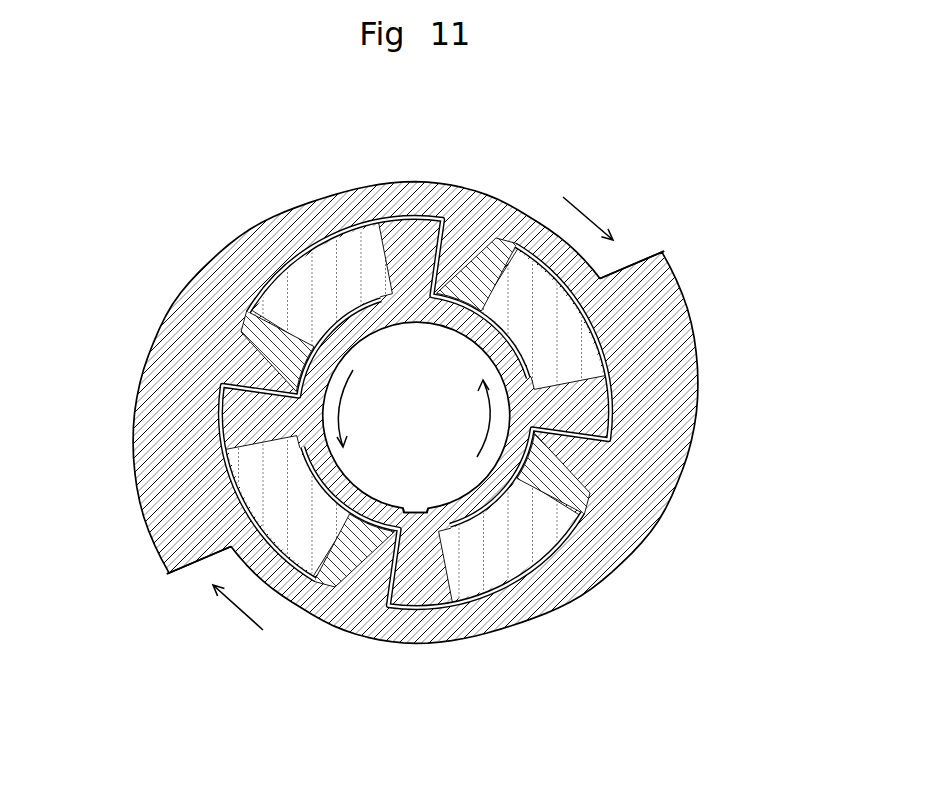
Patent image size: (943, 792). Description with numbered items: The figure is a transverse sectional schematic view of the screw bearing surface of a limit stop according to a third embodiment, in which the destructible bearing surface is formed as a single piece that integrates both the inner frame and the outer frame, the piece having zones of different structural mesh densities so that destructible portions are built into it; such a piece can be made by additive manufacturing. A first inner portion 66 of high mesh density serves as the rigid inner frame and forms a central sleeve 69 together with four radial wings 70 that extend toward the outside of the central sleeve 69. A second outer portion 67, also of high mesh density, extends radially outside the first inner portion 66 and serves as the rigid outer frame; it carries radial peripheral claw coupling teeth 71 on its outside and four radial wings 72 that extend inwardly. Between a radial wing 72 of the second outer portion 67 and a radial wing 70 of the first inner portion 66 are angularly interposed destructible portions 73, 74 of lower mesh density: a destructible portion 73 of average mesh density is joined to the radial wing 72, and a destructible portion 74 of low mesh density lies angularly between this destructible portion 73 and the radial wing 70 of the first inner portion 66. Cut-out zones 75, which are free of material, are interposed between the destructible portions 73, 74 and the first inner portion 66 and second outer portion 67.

The first inner portion 66 is at (353, 465).
The second outer portion 67 is at (252, 228).
The central sleeve 69 is at (367, 497).
The radial wing 70 is at (410, 258).
The radial peripheral claw coupling tooth 71 is at (635, 268).
The radial wing 72 is at (460, 251).
The destructible portion 73 is at (500, 267).
The destructible portion 74 is at (331, 268).
The cut-out zone 75 is at (305, 460).